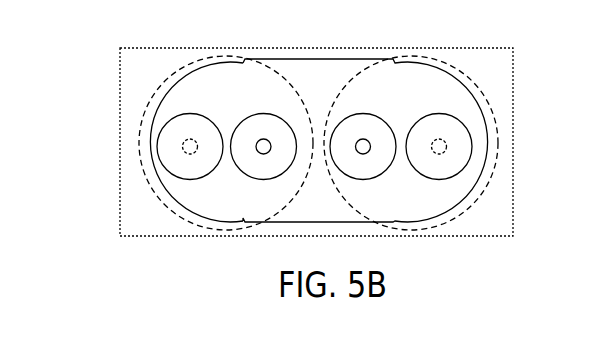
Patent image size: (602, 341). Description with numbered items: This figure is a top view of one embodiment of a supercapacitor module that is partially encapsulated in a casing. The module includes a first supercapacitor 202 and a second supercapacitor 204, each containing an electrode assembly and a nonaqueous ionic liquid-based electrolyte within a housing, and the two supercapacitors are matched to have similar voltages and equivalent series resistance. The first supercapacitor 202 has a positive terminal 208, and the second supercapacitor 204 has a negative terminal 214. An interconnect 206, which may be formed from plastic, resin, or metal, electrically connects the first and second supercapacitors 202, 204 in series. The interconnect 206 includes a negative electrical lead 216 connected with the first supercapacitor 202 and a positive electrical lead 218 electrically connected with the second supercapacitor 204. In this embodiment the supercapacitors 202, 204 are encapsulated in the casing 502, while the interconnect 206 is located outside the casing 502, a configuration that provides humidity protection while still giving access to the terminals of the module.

The first supercapacitor 202 is at (142, 163).
The second supercapacitor 204 is at (443, 61).
The interconnect 206 is at (360, 58).
The positive terminal 208 is at (150, 153).
The negative terminal 214 is at (468, 133).
The negative electrical lead 216 is at (257, 142).
The positive electrical lead 218 is at (370, 150).
The casing 502 is at (119, 98).